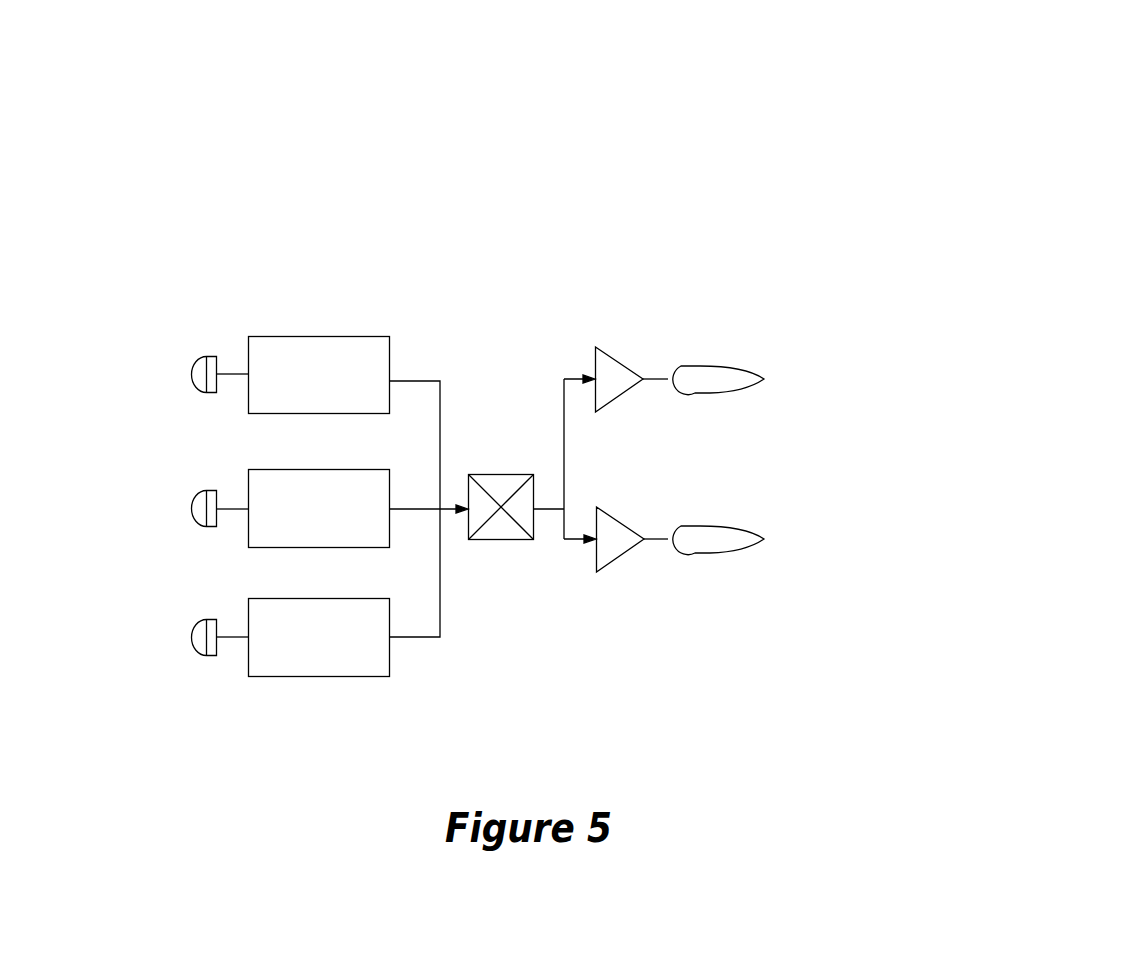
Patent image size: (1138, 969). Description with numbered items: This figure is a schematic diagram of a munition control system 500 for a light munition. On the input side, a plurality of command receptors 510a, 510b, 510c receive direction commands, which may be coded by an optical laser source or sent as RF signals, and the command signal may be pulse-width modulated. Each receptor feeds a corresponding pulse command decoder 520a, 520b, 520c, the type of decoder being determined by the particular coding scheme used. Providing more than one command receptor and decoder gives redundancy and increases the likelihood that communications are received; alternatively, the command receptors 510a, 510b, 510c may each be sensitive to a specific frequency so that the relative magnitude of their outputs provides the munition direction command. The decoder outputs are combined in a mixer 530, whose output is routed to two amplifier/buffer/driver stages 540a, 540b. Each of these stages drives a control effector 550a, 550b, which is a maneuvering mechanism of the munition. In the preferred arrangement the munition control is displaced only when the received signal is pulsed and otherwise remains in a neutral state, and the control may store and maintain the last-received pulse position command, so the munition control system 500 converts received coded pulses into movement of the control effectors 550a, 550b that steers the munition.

The munition control system 500 is at (1044, 57).
The command receptor 510a is at (212, 356).
The command receptor 510b is at (212, 490).
The command receptor 510c is at (212, 619).
The pulse command decoder 520a is at (342, 409).
The pulse command decoder 520b is at (342, 542).
The pulse command decoder 520c is at (342, 671).
The mixer 530 is at (480, 474).
The amplifier/buffer/driver stage 540a is at (614, 360).
The amplifier/buffer/driver stage 540b is at (612, 513).
The control effector 550a is at (710, 365).
The control effector 550b is at (713, 527).